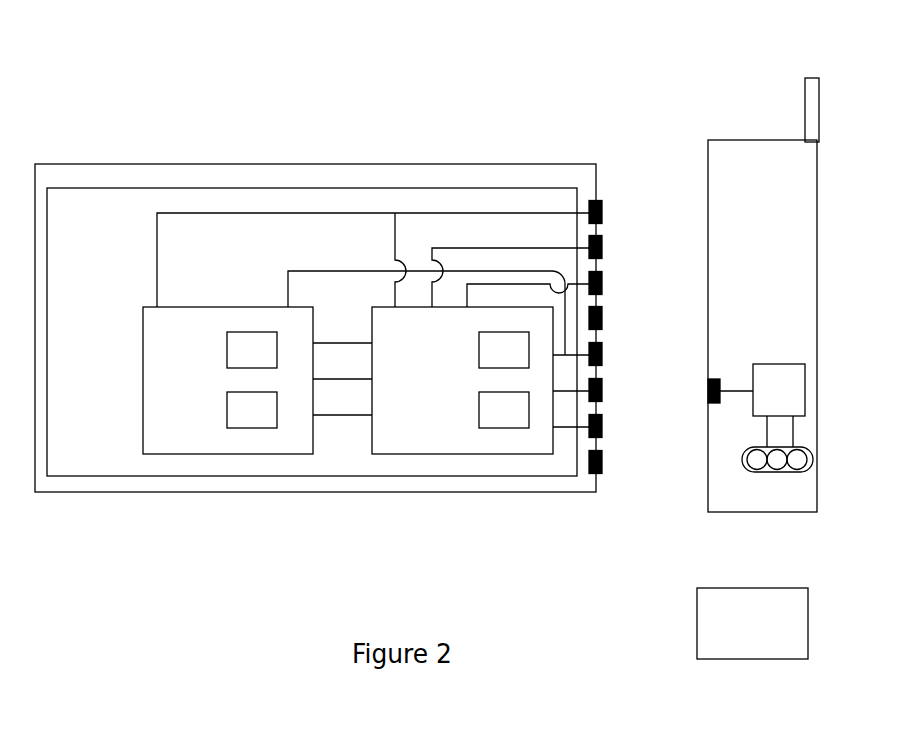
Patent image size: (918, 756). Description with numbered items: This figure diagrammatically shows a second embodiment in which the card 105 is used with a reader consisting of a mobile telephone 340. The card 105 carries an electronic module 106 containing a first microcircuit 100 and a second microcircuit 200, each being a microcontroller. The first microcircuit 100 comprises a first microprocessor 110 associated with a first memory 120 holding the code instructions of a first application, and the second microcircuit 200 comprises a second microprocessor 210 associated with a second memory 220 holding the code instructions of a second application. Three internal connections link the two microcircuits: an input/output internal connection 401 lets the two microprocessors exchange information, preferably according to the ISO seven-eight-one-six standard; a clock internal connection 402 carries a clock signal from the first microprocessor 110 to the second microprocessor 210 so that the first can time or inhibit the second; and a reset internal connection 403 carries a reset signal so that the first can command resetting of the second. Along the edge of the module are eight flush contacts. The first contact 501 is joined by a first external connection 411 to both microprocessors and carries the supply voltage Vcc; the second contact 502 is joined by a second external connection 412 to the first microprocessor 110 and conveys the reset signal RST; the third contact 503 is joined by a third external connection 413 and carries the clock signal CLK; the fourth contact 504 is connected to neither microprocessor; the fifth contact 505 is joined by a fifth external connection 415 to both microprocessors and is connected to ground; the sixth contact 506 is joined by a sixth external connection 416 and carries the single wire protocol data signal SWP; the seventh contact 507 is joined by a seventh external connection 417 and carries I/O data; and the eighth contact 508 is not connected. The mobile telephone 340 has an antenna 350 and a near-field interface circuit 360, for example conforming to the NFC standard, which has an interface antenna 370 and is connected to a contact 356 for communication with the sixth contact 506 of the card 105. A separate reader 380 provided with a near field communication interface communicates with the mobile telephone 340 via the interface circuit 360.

The first microcircuit 100 is at (395, 440).
The card 105 is at (103, 177).
The electronic module 106 is at (252, 202).
The first microprocessor 110 is at (515, 417).
The first memory 120 is at (517, 343).
The second microcircuit 200 is at (188, 440).
The second microprocessor 210 is at (252, 416).
The second memory 220 is at (247, 343).
The mobile telephone 340 is at (750, 153).
The antenna 350 is at (810, 86).
The contact 356 is at (707, 398).
The interface circuit 360 is at (757, 402).
The interface antenna 370 is at (773, 467).
The reader 380 is at (710, 602).
The input/output internal connection 401 is at (333, 343).
The clock internal connection 402 is at (343, 380).
The reset internal connection 403 is at (340, 417).
The first external connection 411 is at (183, 210).
The second external connection 412 is at (502, 248).
The third external connection 413 is at (512, 284).
The fifth external connection 415 is at (317, 270).
The sixth external connection 416 is at (569, 395).
The seventh external connection 417 is at (565, 430).
The first contact 501 is at (603, 210).
The second contact 502 is at (603, 245).
The third contact 503 is at (603, 281).
The fourth contact 504 is at (603, 316).
The fifth contact 505 is at (603, 352).
The sixth contact 506 is at (603, 388).
The seventh contact 507 is at (603, 424).
The eighth contact 508 is at (603, 460).